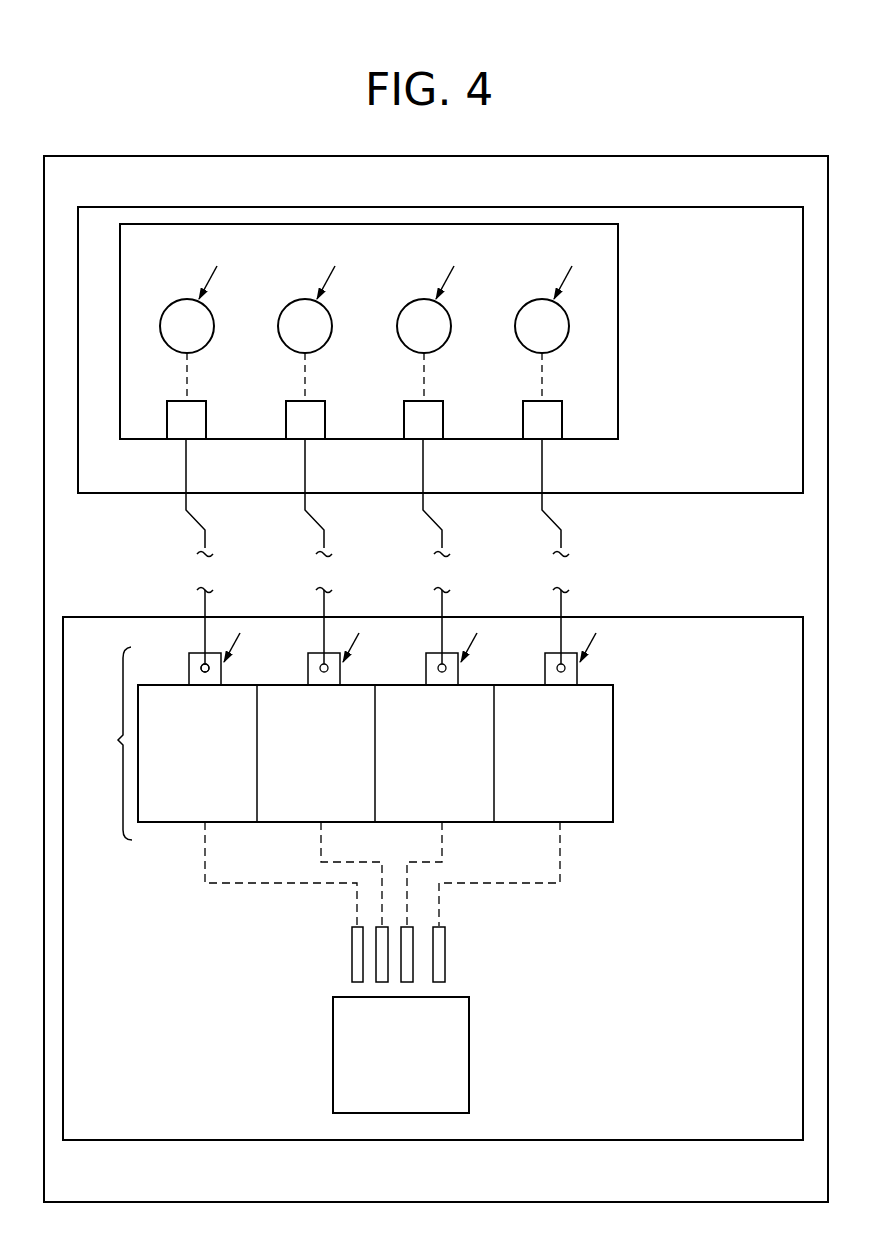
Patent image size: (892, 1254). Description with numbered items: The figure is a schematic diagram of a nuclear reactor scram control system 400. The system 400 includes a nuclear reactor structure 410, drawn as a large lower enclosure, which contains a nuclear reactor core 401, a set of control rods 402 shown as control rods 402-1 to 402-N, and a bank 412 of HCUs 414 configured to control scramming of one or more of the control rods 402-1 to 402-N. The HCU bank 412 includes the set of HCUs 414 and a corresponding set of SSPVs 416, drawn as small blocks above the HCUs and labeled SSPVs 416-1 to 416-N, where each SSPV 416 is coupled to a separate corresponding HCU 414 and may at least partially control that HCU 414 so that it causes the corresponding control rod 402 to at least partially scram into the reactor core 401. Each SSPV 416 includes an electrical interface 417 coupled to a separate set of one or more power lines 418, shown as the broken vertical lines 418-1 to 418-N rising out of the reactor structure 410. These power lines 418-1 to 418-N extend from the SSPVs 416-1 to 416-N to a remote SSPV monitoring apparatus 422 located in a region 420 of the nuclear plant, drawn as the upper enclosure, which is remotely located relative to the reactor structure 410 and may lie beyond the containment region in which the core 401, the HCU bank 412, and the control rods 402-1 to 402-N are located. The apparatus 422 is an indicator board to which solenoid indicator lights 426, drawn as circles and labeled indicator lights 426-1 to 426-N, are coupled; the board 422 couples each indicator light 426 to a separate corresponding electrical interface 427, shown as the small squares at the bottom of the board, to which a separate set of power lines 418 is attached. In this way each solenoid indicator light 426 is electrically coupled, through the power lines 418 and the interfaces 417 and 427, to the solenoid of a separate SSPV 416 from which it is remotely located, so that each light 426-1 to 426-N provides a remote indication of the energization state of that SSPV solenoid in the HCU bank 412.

The nuclear reactor scram control system 400 is at (94, 193).
The nuclear reactor core 401 is at (419, 1067).
The control rod 402 is at (400, 902).
The first control rod 402-1 is at (357, 954).
The nth control rod 402-N is at (439, 954).
The nuclear reactor structure 410 is at (687, 1106).
The HCU bank 412 is at (101, 743).
The HCU 414 is at (455, 753).
The SSPV 416 is at (496, 654).
The first SSPV 416-1 is at (214, 659).
The nth SSPV 416-N is at (570, 659).
The electrical interface 417 is at (200, 668).
The power lines 418 is at (467, 551).
The first set of power lines 418-1 is at (199, 551).
The nth set of power lines 418-N is at (574, 605).
The region 420 is at (720, 237).
The remote SSPV monitoring apparatus 422 is at (603, 255).
The solenoid indicator light 426 is at (478, 304).
The first solenoid indicator light 426-1 is at (188, 309).
The nth solenoid indicator light 426-N is at (543, 309).
The electrical interface 427 is at (178, 427).